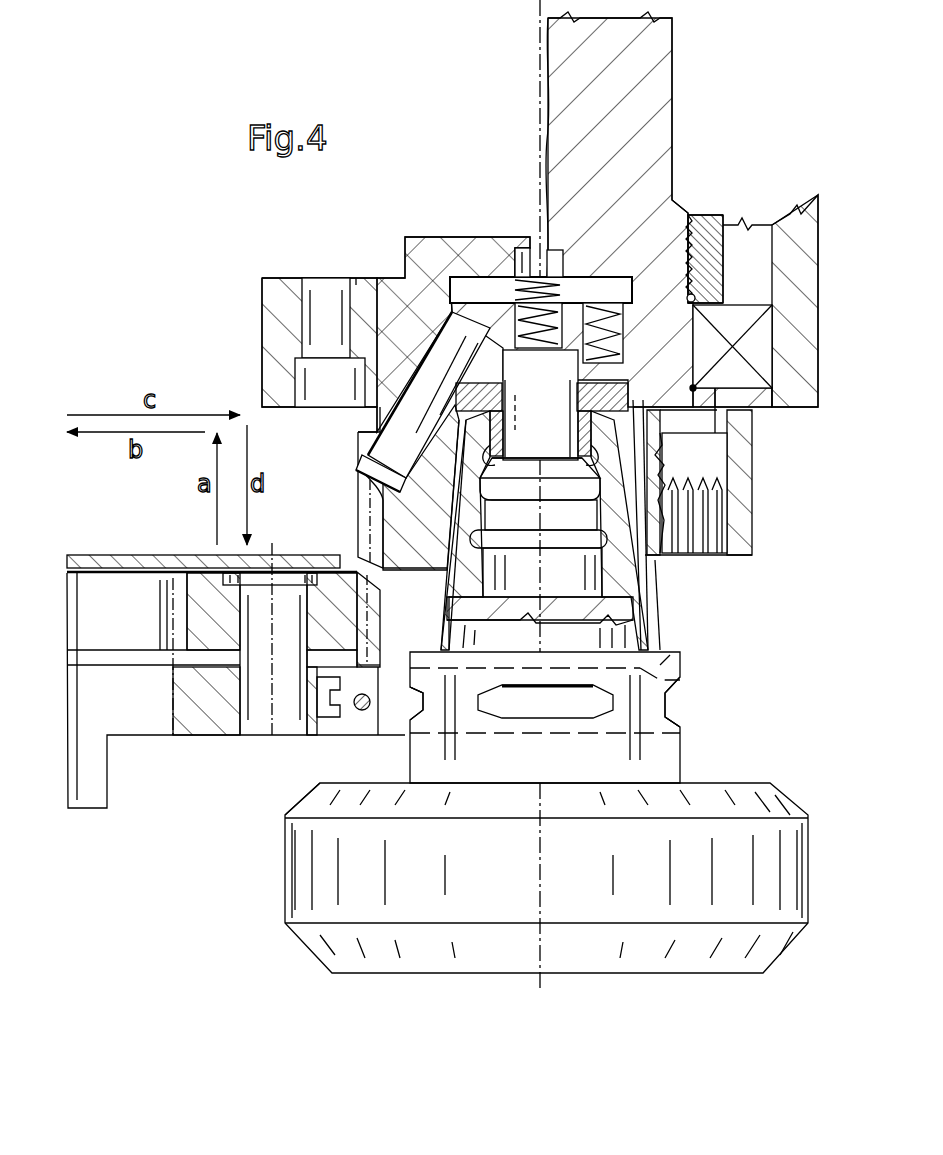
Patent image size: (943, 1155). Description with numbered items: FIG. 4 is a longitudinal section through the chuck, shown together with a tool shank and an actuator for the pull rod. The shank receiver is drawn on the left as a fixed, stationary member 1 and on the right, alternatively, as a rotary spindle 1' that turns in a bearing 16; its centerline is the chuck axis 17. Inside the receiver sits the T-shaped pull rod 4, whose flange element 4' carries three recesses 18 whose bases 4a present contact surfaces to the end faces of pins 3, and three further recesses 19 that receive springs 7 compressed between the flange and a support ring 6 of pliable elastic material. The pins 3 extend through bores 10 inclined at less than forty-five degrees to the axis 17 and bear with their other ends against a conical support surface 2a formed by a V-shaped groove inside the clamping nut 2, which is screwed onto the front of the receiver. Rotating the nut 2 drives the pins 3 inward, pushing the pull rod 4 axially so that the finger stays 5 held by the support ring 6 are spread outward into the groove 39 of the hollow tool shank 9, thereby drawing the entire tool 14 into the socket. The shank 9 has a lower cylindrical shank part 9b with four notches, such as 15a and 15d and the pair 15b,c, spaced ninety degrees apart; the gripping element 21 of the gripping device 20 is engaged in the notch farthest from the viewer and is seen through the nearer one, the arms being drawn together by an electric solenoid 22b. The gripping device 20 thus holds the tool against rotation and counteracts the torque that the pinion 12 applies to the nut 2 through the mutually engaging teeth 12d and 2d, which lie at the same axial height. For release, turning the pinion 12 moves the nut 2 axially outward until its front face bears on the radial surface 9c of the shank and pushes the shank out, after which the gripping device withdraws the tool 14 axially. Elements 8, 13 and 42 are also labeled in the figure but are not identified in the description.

The rotary spindle 1' is at (634, 209).
The shank receiver 1 is at (372, 334).
The bore 10 is at (362, 285).
The recess base 4a is at (422, 352).
The flange element 4' is at (429, 337).
The recess 18 is at (493, 300).
The pin 8 is at (553, 262).
The pull rod 4 is at (541, 272).
The further recess 19 is at (645, 285).
The spring 7 is at (695, 299).
The bearing 16 is at (757, 343).
The pin 3 is at (358, 347).
The support ring 6 is at (635, 407).
The conical surface 2a is at (368, 458).
The clamping nut 2 is at (728, 483).
The teeth 2d is at (374, 512).
The finger stays 5 is at (596, 470).
The pinion 12 is at (200, 577).
The groove 39 is at (598, 548).
The collet body 42 is at (442, 566).
The pinion teeth 12d is at (378, 628).
The radial surface 9c is at (655, 648).
The cylindrical shank part 9b is at (663, 660).
The hollow shank 9 is at (557, 704).
The notch 15a is at (663, 700).
The tool 14 is at (725, 715).
The gripper shaft 13 is at (273, 735).
The gripping element 21 is at (505, 702).
The electric solenoid 22b is at (356, 710).
The notches 15b,c is at (560, 705).
The gripping device 20 is at (207, 740).
The notch 15d is at (315, 788).
The axis 17 is at (545, 990).